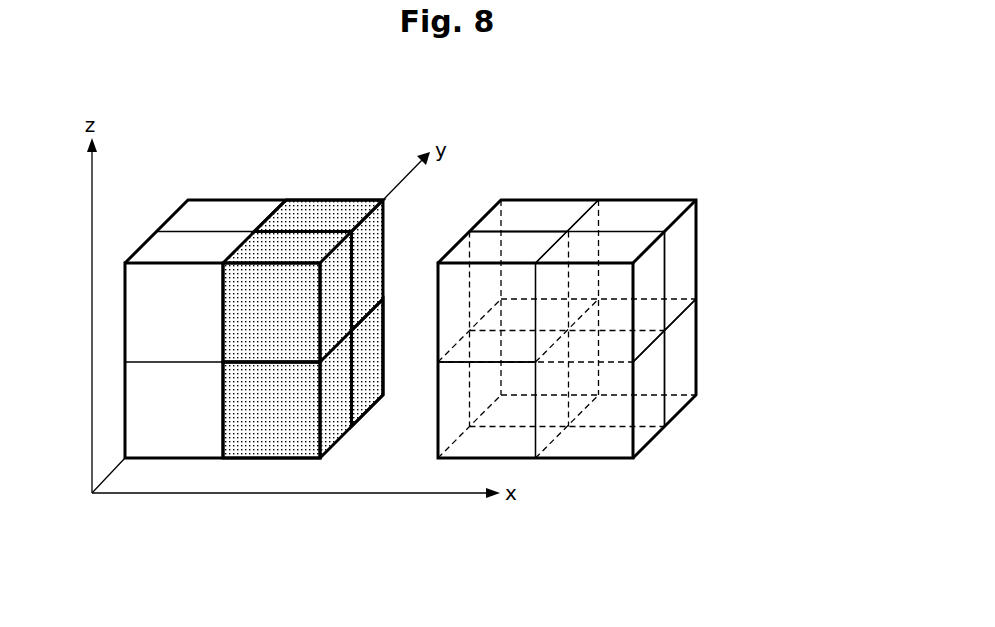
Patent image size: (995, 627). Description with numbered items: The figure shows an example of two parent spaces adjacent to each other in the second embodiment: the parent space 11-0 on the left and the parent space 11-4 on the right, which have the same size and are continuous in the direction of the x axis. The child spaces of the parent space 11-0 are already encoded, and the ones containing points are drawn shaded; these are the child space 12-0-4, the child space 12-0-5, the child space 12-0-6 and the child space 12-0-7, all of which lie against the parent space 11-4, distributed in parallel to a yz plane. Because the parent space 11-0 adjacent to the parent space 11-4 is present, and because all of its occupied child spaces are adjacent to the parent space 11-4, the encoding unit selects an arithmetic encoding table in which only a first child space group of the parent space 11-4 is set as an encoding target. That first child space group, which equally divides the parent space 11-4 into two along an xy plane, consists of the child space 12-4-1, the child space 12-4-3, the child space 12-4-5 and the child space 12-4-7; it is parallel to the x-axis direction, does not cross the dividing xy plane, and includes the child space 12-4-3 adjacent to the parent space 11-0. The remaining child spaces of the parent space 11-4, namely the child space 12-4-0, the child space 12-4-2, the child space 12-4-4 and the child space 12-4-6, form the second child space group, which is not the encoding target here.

The parent space 11-0 is at (262, 120).
The parent space 11-4 is at (611, 120).
The child space 12-0-4 is at (268, 425).
The child space 12-0-5 is at (260, 298).
The child space 12-0-6 is at (367, 388).
The child space 12-0-7 is at (337, 213).
The child space 12-4-0 is at (513, 413).
The child space 12-4-1 is at (525, 245).
The child space 12-4-2 is at (520, 342).
The child space 12-4-3 is at (553, 215).
The child space 12-4-4 is at (650, 407).
The child space 12-4-5 is at (650, 310).
The child space 12-4-6 is at (682, 368).
The child space 12-4-7 is at (682, 263).